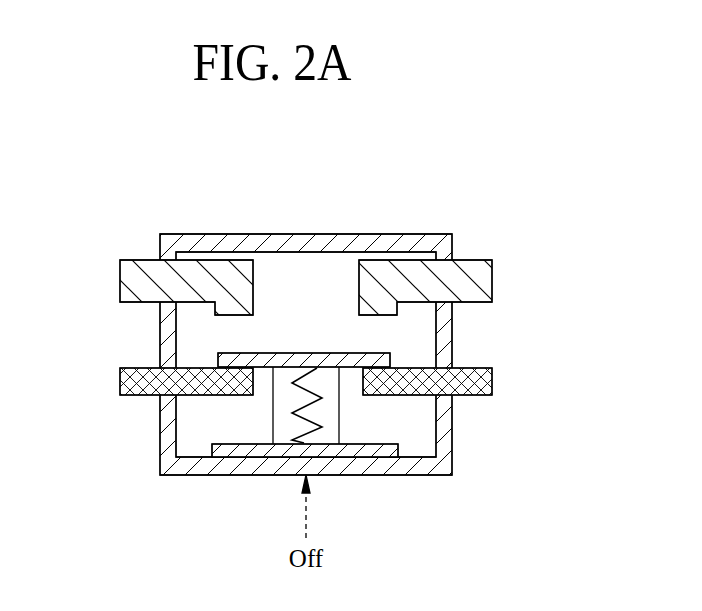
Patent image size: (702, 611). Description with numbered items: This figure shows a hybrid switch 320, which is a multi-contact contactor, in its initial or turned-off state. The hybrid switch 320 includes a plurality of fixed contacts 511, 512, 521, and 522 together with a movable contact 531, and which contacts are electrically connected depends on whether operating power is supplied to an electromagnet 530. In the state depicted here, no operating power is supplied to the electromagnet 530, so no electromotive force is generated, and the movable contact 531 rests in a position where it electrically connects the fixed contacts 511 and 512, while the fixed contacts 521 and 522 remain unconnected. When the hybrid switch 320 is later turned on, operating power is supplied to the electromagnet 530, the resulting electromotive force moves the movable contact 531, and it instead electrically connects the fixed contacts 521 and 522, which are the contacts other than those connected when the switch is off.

The hybrid switch 320 is at (79, 217).
The fixed contact 521 is at (120, 280).
The fixed contact 522 is at (492, 280).
The movable contact 531 is at (310, 353).
The fixed contact 511 is at (120, 379).
The fixed contact 512 is at (492, 379).
The electromagnet 530 is at (340, 420).